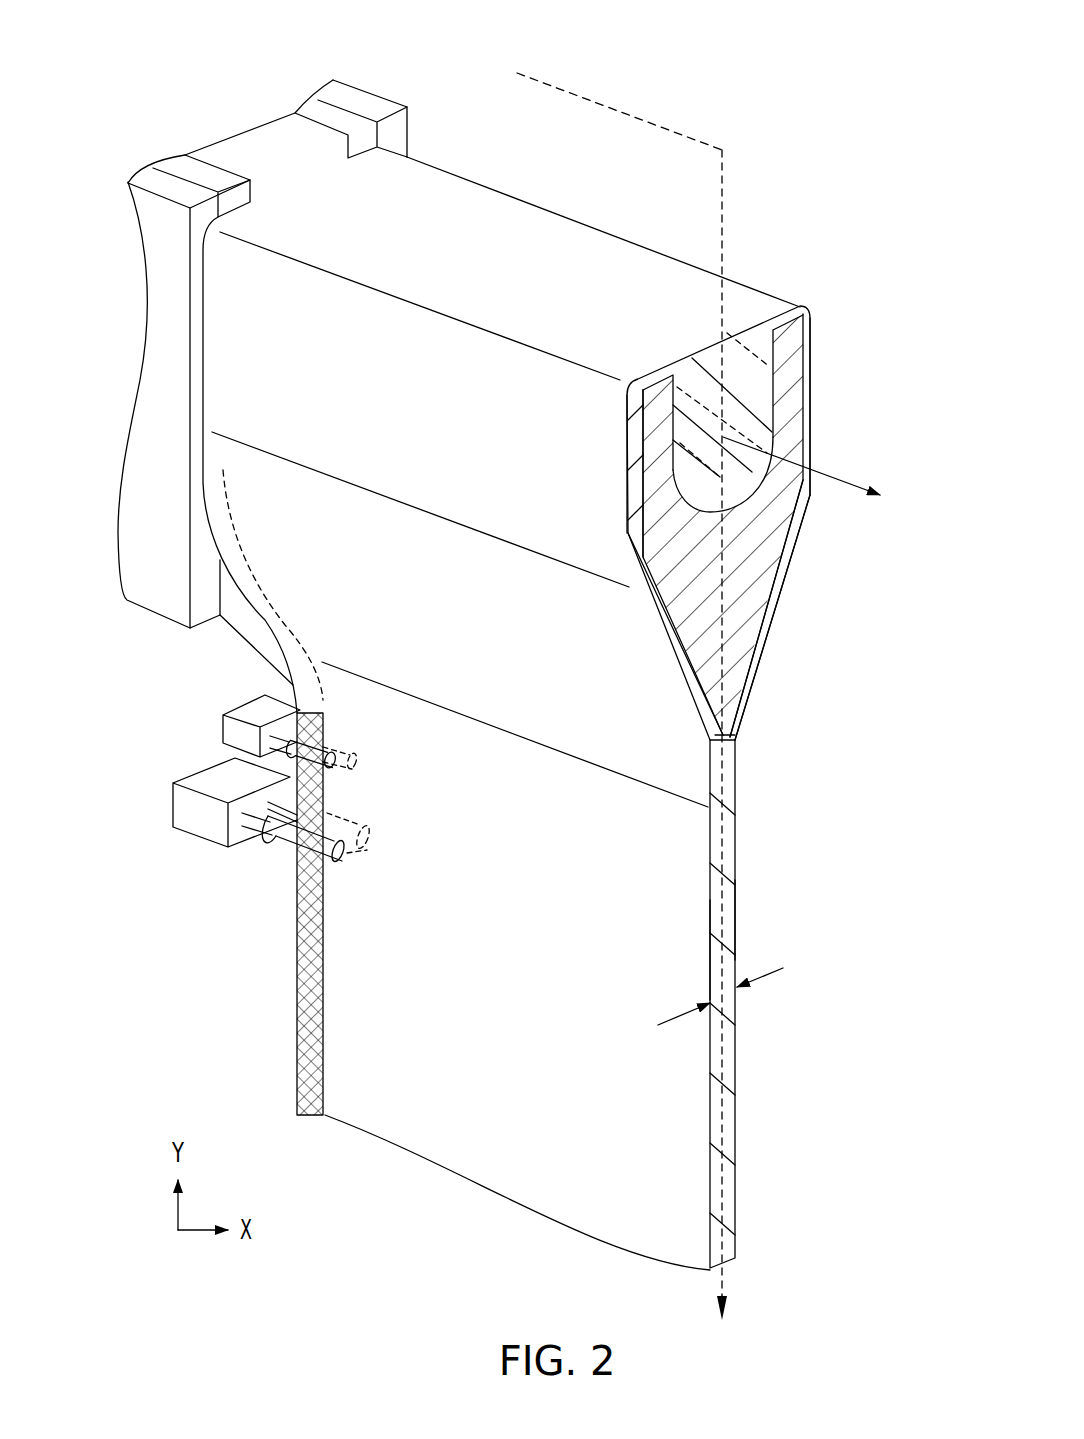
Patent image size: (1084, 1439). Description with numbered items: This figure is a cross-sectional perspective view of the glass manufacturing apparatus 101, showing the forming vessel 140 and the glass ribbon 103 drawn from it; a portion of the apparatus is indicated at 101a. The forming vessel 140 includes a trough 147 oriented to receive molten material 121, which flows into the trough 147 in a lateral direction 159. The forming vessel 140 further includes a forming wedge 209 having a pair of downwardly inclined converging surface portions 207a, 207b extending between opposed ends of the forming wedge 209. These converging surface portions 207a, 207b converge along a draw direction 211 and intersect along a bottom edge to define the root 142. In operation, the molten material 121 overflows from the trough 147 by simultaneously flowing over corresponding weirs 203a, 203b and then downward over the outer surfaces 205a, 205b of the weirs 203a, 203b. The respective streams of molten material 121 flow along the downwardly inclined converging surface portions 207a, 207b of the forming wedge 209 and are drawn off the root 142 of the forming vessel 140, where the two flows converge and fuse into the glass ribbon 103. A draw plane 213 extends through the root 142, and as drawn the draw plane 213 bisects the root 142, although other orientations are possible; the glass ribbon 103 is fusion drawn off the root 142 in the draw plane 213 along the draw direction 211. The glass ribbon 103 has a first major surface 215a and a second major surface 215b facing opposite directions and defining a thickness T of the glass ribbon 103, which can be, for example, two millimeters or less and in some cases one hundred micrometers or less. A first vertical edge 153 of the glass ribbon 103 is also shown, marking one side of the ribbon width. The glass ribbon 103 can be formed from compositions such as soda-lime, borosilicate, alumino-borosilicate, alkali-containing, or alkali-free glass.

The glass manufacturing apparatus 101 is at (637, 80).
The housing portion 101a is at (650, 170).
The glass ribbon 103 is at (692, 878).
The molten material 121 is at (763, 395).
The forming vessel 140 is at (800, 237).
The root 142 is at (727, 737).
The trough 147 is at (775, 425).
The first vertical edge 153 is at (298, 995).
The lateral direction 159 is at (860, 488).
The weir 203a is at (653, 380).
The weir 203b is at (778, 330).
The outer surface 205a is at (637, 455).
The outer surface 205b is at (813, 350).
The downwardly inclined converging surface portion 207a is at (693, 673).
The downwardly inclined converging surface portion 207b is at (755, 633).
The forming wedge 209 is at (770, 533).
The draw direction 211 is at (728, 1292).
The draw plane 213 is at (722, 180).
The first major surface 215a is at (710, 933).
The second major surface 215b is at (735, 907).
The thickness T is at (780, 969).